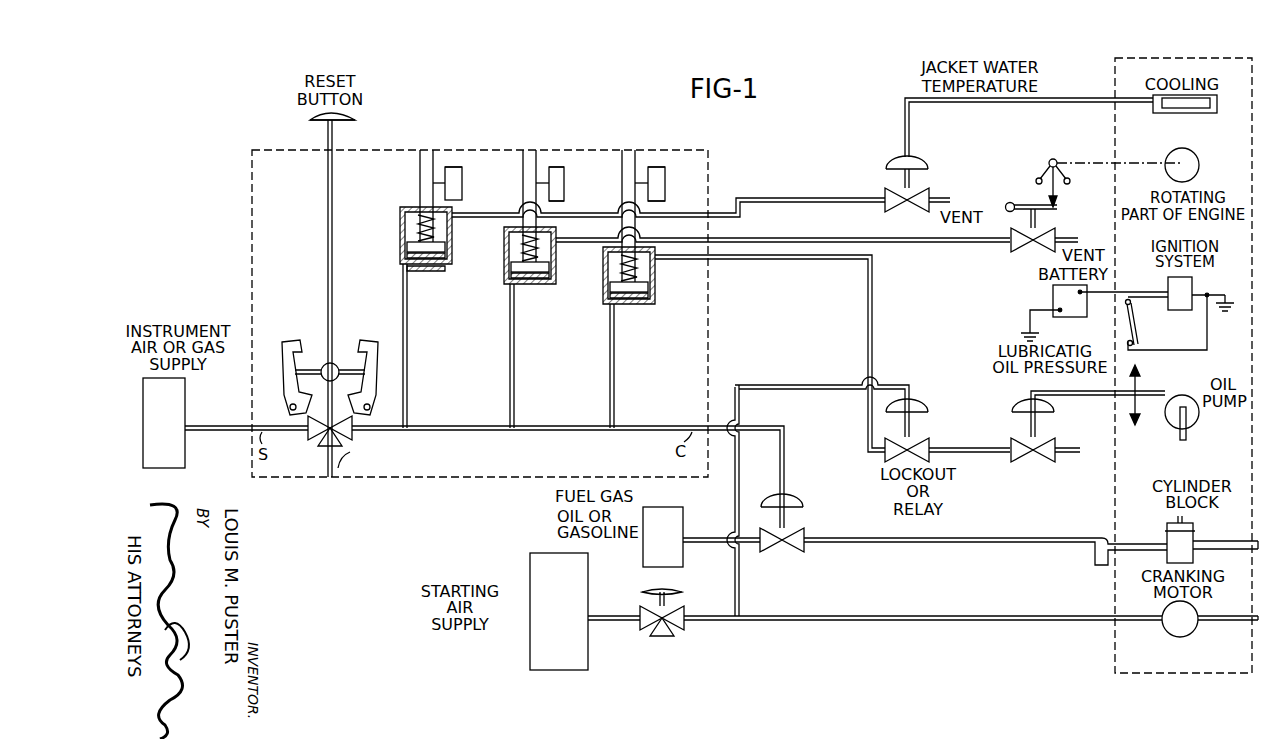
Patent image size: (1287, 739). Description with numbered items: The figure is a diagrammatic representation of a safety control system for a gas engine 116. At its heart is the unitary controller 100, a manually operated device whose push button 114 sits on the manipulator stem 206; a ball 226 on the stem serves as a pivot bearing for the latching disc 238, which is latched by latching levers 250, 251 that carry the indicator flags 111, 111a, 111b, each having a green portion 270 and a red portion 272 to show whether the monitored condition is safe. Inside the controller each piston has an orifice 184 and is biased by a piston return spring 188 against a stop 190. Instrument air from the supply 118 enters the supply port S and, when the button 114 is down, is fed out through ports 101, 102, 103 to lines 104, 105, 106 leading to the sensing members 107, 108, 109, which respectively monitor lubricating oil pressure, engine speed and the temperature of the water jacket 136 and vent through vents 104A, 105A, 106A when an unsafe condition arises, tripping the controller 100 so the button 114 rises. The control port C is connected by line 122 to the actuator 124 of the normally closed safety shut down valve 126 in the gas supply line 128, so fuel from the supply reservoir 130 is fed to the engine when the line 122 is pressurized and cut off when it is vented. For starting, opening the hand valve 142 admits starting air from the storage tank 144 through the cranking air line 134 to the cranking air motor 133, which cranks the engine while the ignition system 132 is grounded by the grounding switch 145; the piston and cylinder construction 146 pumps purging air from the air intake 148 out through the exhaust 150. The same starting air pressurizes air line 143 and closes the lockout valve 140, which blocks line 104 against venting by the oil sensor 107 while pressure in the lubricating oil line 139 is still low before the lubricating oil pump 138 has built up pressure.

The unitary controller 100 is at (443, 488).
The port 101 is at (707, 262).
The port 102 is at (710, 244).
The port 103 is at (712, 213).
The line 104 is at (758, 266).
The vent 104A is at (1072, 456).
The line 105 is at (810, 238).
The vent 105A is at (1062, 244).
The line 106 is at (805, 198).
The vent 106A is at (953, 202).
The lubricating oil pressure sensing member 107 is at (1053, 450).
The speed responsive sensing member 108 is at (1055, 228).
The temperature sensing valve 109 is at (925, 194).
The indicator flag 111 is at (463, 183).
The indicator flag 111a is at (564, 183).
The indicator flag 111b is at (665, 183).
The push button 114 is at (356, 118).
The gas engine 116 is at (1115, 136).
The supply 118 is at (186, 441).
The line 122 is at (790, 452).
The actuator 124 is at (800, 505).
The safety shut down valve 126 is at (803, 536).
The gas supply line 128 is at (862, 542).
The supply reservoir 130 is at (680, 528).
The ignition system 132 is at (1201, 291).
The cranking air motor 133 is at (1185, 631).
The cranking air line 134 is at (856, 622).
The water jacket 136 is at (1190, 114).
The lubricating oil pump 138 is at (1196, 422).
The lubricating oil pressure line 139 is at (1056, 400).
The lockout valve 140 is at (930, 448).
The cranking air valve 142 is at (676, 593).
The air line 143 is at (778, 389).
The starting air supply 144 is at (530, 655).
The grounding switch 145 is at (1141, 332).
The piston and cylinder construction 146 is at (1188, 527).
The air intake 148 is at (1095, 556).
The exhaust 150 is at (1256, 540).
The orifice 184 is at (402, 246).
The piston return spring 188 is at (412, 221).
The stop 190 is at (432, 264).
The manipulator stem 206 is at (333, 292).
The ball 226 is at (323, 364).
The latching disc 238 is at (292, 376).
The latching lever 250 is at (368, 350).
The latching lever 251 is at (278, 350).
The green signal 270 is at (449, 168).
The red portion 272 is at (563, 195).